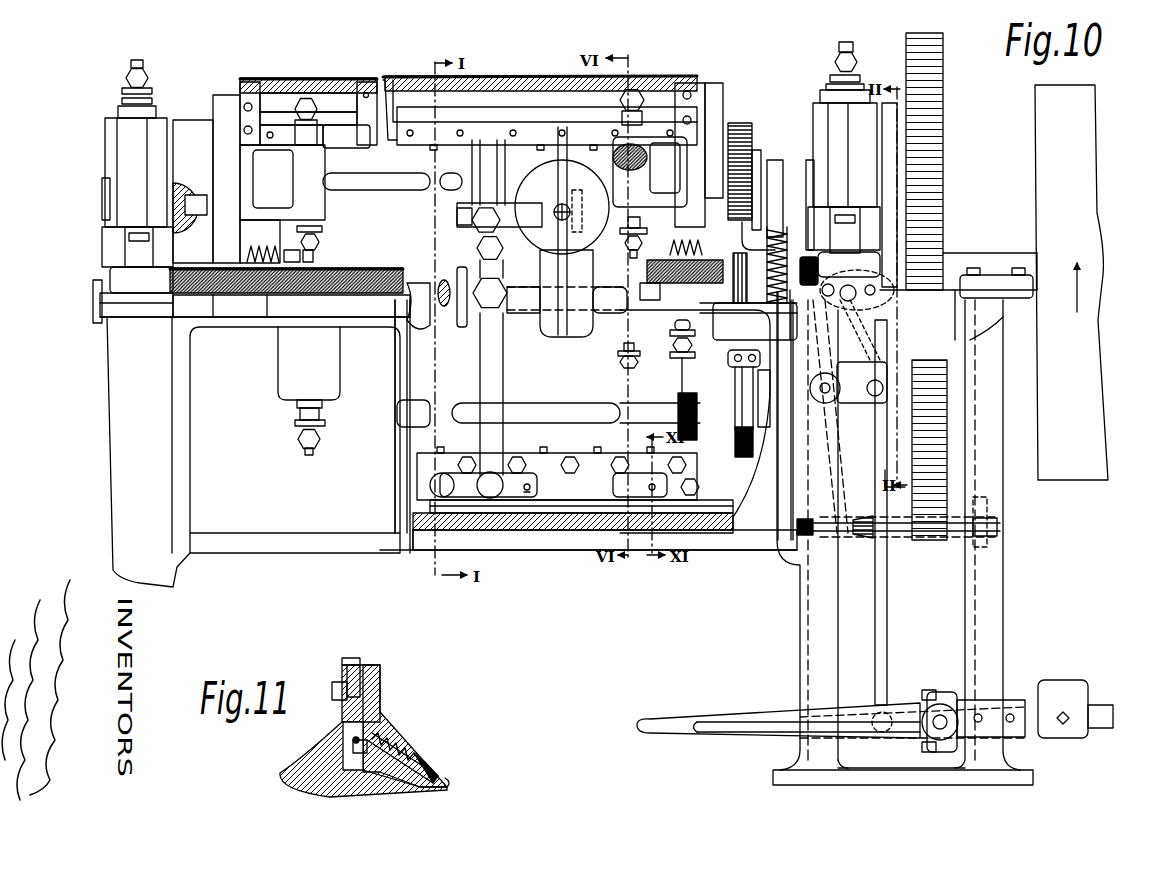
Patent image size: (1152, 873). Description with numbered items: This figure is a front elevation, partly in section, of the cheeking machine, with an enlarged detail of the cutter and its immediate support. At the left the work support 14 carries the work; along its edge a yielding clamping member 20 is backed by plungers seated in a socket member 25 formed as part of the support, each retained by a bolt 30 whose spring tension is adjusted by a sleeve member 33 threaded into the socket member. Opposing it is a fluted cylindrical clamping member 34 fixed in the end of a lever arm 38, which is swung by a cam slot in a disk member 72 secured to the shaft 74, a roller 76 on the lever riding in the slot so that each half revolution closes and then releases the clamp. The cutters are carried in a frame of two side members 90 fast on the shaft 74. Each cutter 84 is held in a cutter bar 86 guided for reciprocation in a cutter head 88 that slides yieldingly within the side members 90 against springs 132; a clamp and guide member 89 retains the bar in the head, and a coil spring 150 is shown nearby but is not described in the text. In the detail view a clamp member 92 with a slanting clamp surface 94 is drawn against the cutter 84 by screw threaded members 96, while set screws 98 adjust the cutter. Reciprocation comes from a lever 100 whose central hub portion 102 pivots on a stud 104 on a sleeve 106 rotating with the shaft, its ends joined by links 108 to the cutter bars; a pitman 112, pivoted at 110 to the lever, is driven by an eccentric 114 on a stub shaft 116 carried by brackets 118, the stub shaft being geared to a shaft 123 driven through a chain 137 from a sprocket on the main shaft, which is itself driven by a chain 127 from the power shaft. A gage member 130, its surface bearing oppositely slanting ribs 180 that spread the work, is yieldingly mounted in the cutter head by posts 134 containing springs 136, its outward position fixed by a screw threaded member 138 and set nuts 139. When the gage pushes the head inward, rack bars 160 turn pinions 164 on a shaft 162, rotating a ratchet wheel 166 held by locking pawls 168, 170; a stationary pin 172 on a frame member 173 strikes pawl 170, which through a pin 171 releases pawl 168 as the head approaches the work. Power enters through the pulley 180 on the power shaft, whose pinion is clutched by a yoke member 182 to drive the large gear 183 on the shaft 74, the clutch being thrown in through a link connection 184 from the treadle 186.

In FIG. 10, the work support 14 is at (415, 528).
In FIG. 10, the yielding clamping member 20 is at (270, 302).
In FIG. 10, the socket member 25 is at (292, 379).
In FIG. 10, the bolt 30 is at (320, 455).
In FIG. 10, the sleeve member 33 is at (322, 413).
In FIG. 10, the cylindrical clamping member 34 is at (398, 268).
In FIG. 10, the lever arm 38 is at (138, 158).
In FIG. 10, the disk member 72 is at (188, 127).
In FIG. 10, the shaft 74 is at (421, 305).
In FIG. 10, the roller 76 is at (186, 193).
In FIG. 10, the cutter 84 is at (587, 513).
In FIG. 11, the cutter 84 is at (447, 787).
In FIG. 10, the cutter bar 86 is at (548, 492).
In FIG. 11, the cutter bar 86 is at (387, 728).
In FIG. 10, the cutter head 88 is at (250, 181).
In FIG. 11, the cutter head 88 is at (280, 778).
In FIG. 11, the clamp and guide member 89 is at (380, 685).
In FIG. 10, the side member 90 is at (226, 153).
In FIG. 11, the clamp member 92 is at (413, 767).
In FIG. 11, the slanting clamp surface 94 is at (425, 773).
In FIG. 11, the screw threaded member 96 is at (353, 751).
In FIG. 10, the set screw 98 is at (530, 482).
In FIG. 11, the set screw 98 is at (353, 742).
In FIG. 10, the lever 100 is at (499, 383).
In FIG. 10, the central hub portion 102 is at (478, 270).
In FIG. 10, the stud 104 is at (482, 302).
In FIG. 10, the sleeve 106 is at (522, 322).
In FIG. 10, the link 108 is at (457, 474).
In FIG. 10, the pivot 110 is at (472, 216).
In FIG. 10, the pitman 112 is at (544, 233).
In FIG. 10, the eccentric 114 is at (565, 205).
In FIG. 10, the stub shaft 116 is at (577, 240).
In FIG. 10, the bracket 118 is at (536, 188).
In FIG. 10, the shaft 123 is at (590, 327).
In FIG. 10, the chain 127 is at (788, 233).
In FIG. 10, the gage member 130 is at (281, 102).
In FIG. 10, the spring 132 is at (272, 258).
In FIG. 10, the post 134 is at (305, 133).
In FIG. 10, the spring 136 is at (647, 160).
In FIG. 10, the chain 137 is at (715, 278).
In FIG. 10, the screw threaded member 138 is at (313, 258).
In FIG. 10, the set nut 139 is at (316, 246).
In FIG. 10, the spring 150 is at (702, 245).
In FIG. 10, the rack bar 160 is at (747, 436).
In FIG. 10, the shaft 162 is at (407, 188).
In FIG. 10, the pinion 164 is at (678, 410).
In FIG. 10, the ratchet wheel 166 is at (741, 122).
In FIG. 10, the locking pawl 168 is at (735, 370).
In FIG. 10, the locking pawl 170 is at (745, 419).
In FIG. 10, the pin 171 is at (745, 411).
In FIG. 10, the pin 172 is at (757, 168).
In FIG. 10, the member 173 is at (777, 168).
In FIG. 10, the ribs 180 is at (320, 80).
In FIG. 10, the yoke member 182 is at (837, 316).
In FIG. 10, the large gear 183 is at (934, 140).
In FIG. 10, the link connection 184 is at (880, 624).
In FIG. 10, the treadle 186 is at (740, 722).